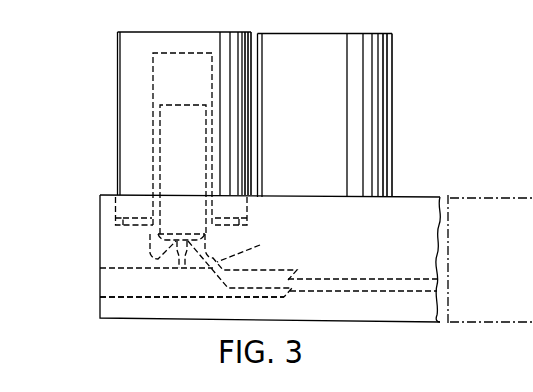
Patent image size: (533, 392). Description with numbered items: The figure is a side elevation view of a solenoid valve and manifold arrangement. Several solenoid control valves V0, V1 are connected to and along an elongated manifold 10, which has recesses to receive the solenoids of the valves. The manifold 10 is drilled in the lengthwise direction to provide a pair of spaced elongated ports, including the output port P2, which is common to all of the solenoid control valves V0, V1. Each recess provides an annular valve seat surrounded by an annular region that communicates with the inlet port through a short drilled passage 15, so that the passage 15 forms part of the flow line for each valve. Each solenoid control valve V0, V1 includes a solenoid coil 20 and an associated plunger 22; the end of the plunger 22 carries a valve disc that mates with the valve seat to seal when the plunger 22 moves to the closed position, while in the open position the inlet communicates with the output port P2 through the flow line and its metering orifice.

The manifold 10 is at (417, 197).
The drilled passage 15 is at (223, 265).
The solenoid coil 20 is at (117, 99).
The plunger 22 is at (162, 146).
The solenoid control valve V0 is at (143, 120).
The solenoid control valve V1 is at (322, 197).
The output port P2 is at (100, 288).